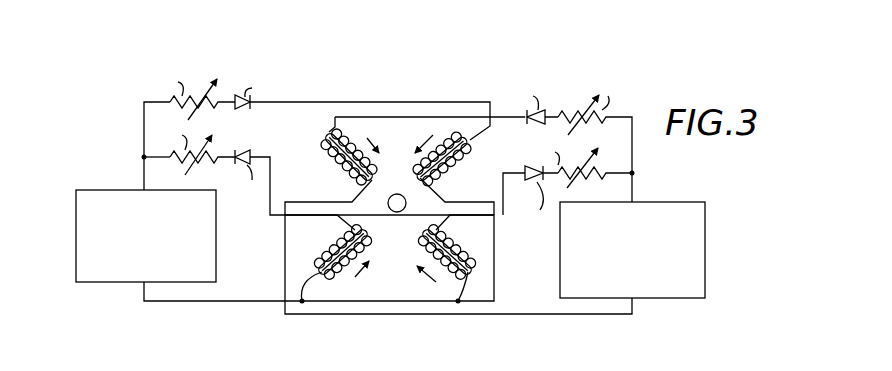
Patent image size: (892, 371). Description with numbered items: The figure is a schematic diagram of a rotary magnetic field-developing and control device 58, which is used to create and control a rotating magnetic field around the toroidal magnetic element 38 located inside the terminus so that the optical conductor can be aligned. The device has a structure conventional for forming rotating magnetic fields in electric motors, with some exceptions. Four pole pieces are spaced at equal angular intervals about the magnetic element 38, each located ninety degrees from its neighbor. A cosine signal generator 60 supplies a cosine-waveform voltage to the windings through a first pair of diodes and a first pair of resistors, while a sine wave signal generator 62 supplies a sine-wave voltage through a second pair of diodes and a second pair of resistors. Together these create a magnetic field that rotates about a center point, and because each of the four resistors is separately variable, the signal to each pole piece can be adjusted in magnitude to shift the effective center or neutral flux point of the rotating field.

The rotary magnetic field-developing and control device 58 is at (539, 47).
The toroidal magnetic element 38 is at (396, 193).
The cosine signal generator 60 is at (76, 276).
The sine wave signal generator 62 is at (662, 299).